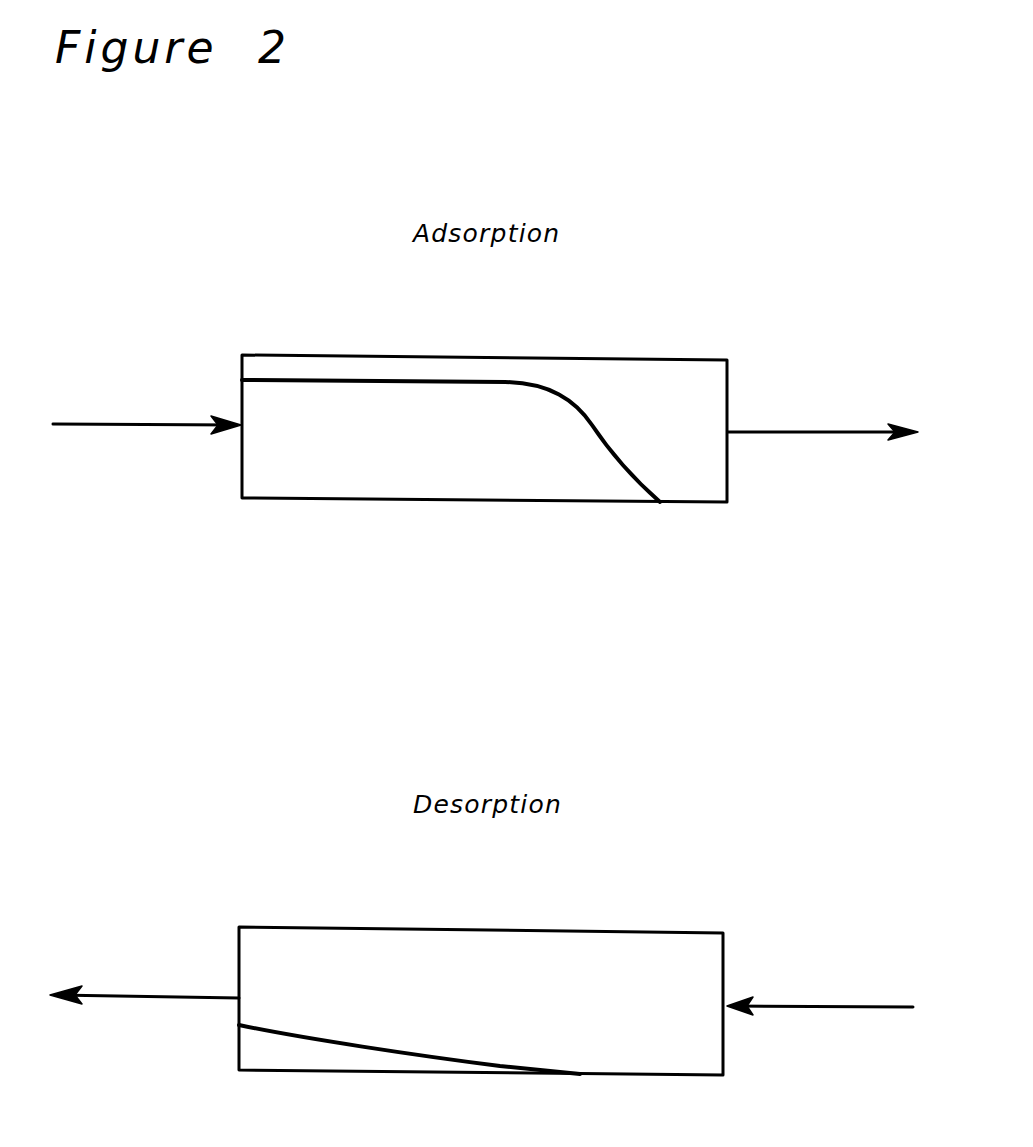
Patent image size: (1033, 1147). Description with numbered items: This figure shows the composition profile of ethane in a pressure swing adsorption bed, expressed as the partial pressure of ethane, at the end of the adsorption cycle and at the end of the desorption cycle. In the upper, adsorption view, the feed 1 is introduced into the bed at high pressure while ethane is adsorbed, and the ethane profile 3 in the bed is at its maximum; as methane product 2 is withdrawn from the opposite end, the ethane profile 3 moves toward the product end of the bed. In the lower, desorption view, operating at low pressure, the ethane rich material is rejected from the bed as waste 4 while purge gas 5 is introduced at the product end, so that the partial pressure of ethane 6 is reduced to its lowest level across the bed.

The feed 1 is at (147, 455).
The methane product 2 is at (753, 427).
The ethane profile 3 is at (477, 383).
The waste 4 is at (168, 997).
The purge gas 5 is at (775, 1003).
The partial pressure of ethane 6 is at (413, 1053).